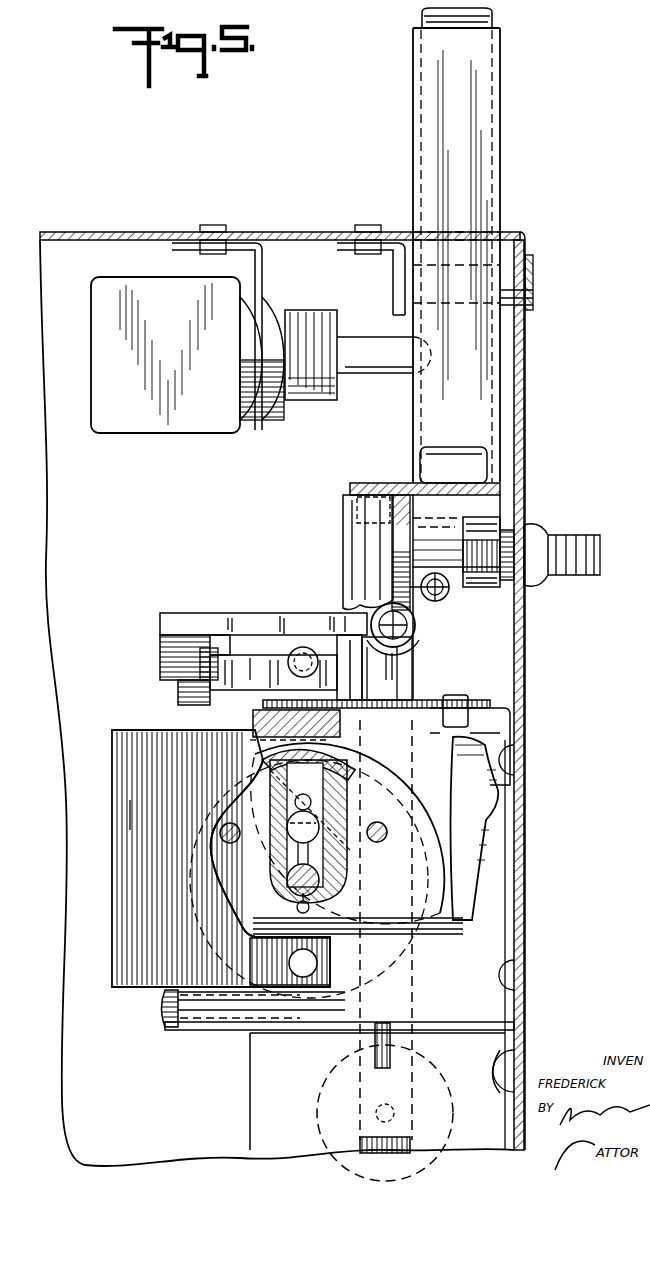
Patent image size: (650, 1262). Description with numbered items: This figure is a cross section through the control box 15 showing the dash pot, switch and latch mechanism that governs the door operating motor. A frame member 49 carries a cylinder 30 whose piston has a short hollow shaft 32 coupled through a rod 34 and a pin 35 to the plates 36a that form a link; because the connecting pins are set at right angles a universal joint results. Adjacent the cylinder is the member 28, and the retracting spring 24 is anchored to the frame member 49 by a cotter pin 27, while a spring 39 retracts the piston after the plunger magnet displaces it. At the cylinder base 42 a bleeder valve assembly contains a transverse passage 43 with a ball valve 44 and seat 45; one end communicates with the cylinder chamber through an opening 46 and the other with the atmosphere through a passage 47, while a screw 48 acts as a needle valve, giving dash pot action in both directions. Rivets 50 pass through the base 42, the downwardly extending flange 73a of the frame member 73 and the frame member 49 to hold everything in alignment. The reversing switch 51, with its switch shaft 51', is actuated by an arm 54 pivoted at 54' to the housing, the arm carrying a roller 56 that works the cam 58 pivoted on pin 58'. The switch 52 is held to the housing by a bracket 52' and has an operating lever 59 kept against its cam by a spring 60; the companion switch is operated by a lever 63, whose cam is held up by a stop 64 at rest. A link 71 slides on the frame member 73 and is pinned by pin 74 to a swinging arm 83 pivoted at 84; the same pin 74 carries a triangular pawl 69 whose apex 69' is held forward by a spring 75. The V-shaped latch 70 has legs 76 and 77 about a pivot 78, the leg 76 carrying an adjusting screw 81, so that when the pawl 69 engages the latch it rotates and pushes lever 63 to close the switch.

The control box 15 is at (80, 237).
The retracting spring 24 is at (163, 1010).
The cotter pin 27 is at (172, 1032).
The disc 28 is at (412, 857).
The cylinder 30 is at (420, 845).
The short hollow shaft 32 is at (303, 961).
The rod 34 is at (285, 963).
The pin 35 is at (322, 896).
The plates 36a is at (252, 905).
The spring 39 is at (449, 590).
The base 42 is at (347, 785).
The transverse passage 43 is at (335, 748).
The ball valve 44 is at (278, 840).
The seat 45 is at (228, 844).
The opening 46 is at (290, 815).
The passage 47 is at (312, 860).
The screw 48 is at (320, 878).
The frame member 49 is at (478, 920).
The rivets 50 is at (228, 828).
The reversing switch 51 is at (214, 372).
The switch shaft 51' is at (384, 371).
The switch 52 is at (377, 1107).
The bracket 52' is at (517, 1045).
The arm 54 is at (474, 354).
The pivot 54' is at (541, 279).
The roller 56 is at (478, 465).
The cam 58 is at (450, 486).
The pin 58' is at (553, 533).
The operating lever 59 is at (405, 668).
The spring 60 is at (397, 575).
The lever 63 is at (356, 545).
The stop 64 is at (404, 486).
The pawl 69 is at (273, 641).
The apex 69' is at (165, 676).
The latch 70 is at (185, 608).
The link 71 is at (268, 722).
The frame member 73 is at (128, 732).
The downwardly extending flange 73a is at (130, 806).
The pin 74 is at (354, 690).
The spring 75 is at (304, 647).
The leg 76 is at (246, 616).
The leg 77 is at (166, 666).
The pivot 78 is at (200, 682).
The adjusting screw 81 is at (416, 630).
The swinging arm 83 is at (400, 703).
The pivot 84 is at (458, 698).